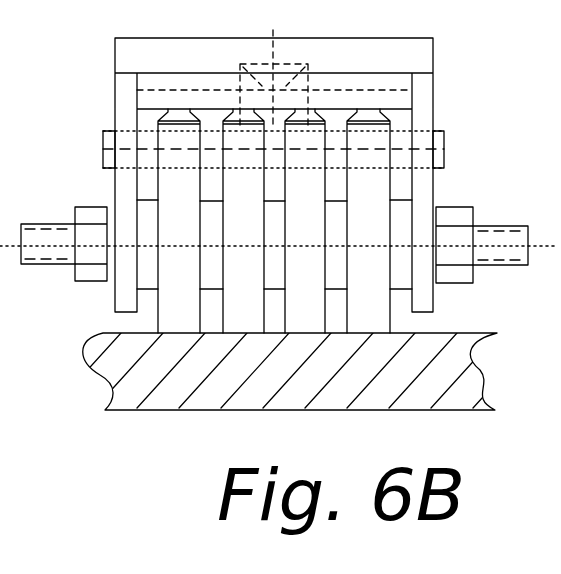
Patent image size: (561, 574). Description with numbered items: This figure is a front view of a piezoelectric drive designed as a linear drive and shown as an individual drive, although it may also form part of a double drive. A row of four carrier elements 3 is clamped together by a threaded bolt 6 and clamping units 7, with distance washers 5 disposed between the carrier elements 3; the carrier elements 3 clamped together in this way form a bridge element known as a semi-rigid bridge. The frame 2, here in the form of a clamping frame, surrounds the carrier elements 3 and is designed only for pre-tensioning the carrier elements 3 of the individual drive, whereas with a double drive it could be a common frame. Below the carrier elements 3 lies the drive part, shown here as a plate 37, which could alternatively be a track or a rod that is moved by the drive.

The frame 2 is at (413, 56).
The carrier elements 3 is at (240, 215).
The distance washers 5 is at (397, 219).
The threaded bolt 6 is at (509, 242).
The clamping units 7 is at (465, 273).
The plate 37 is at (110, 379).